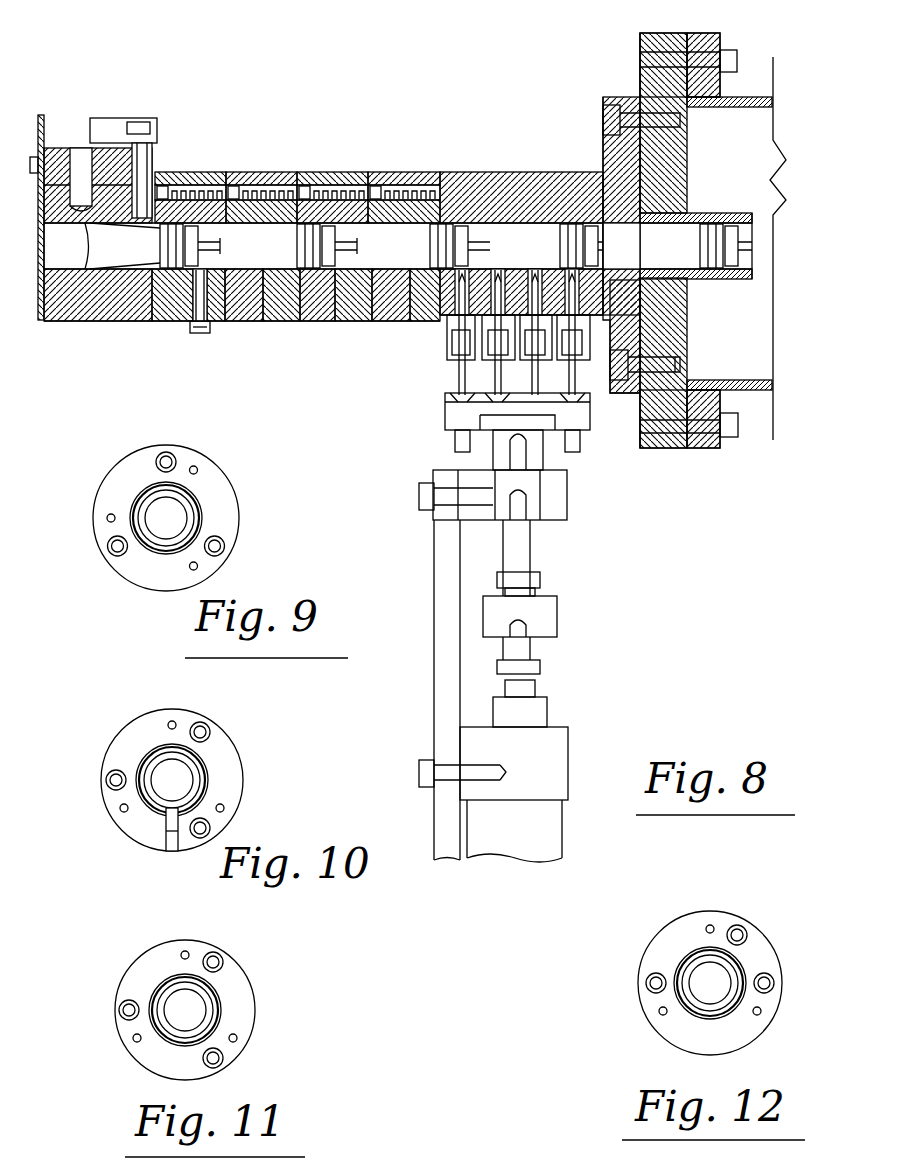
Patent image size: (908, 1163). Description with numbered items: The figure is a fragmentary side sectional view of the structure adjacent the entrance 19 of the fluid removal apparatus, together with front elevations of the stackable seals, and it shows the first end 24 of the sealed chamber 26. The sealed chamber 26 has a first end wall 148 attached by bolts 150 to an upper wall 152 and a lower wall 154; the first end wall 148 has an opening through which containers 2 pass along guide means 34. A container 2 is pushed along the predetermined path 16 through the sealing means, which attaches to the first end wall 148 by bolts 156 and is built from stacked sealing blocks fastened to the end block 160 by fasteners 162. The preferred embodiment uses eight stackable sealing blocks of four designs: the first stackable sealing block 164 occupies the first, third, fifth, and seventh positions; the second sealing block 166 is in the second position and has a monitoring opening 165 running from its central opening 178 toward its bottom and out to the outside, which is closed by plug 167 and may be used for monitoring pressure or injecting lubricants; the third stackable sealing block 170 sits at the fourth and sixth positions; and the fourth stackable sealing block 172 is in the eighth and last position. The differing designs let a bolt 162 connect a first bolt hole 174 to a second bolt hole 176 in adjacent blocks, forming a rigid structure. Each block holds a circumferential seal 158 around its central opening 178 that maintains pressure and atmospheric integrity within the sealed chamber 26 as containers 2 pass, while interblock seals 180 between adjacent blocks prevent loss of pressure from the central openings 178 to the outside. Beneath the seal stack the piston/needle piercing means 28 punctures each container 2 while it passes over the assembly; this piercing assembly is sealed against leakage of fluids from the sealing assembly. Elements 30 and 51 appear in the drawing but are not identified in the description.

In FIG. 8, the container 2 is at (705, 266).
In FIG. 8, the predetermined path 16 is at (700, 297).
In FIG. 8, the entrance 19 is at (56, 258).
In FIG. 8, the first end 24 is at (625, 80).
In FIG. 8, the sealed chamber 26 is at (655, 475).
In FIG. 8, the piercing means 28 is at (568, 698).
In FIG. 8, the valve housing assembly 30 is at (450, 140).
In FIG. 8, the guide means 34 is at (712, 213).
In FIG. 8, the pins 51 is at (572, 265).
In FIG. 8, the first end wall 148 is at (640, 48).
In FIG. 8, the bolts 150 is at (737, 50).
In FIG. 8, the upper wall 152 is at (762, 108).
In FIG. 8, the lower wall 154 is at (760, 393).
In FIG. 8, the bolts 156 is at (603, 118).
In FIG. 9, the circumferential seal 158 is at (187, 512).
In FIG. 10, the circumferential seal 158 is at (196, 773).
In FIG. 11, the circumferential seal 158 is at (208, 1008).
In FIG. 12, the circumferential seal 158 is at (732, 975).
In FIG. 8, the end block 160 is at (540, 172).
In FIG. 8, the fasteners 162 is at (250, 172).
In FIG. 8, the first stackable sealing block 164 is at (172, 321).
In FIG. 9, the first stackable sealing block 164 is at (218, 520).
In FIG. 8, the monitoring opening 165 is at (196, 334).
In FIG. 8, the second sealing block 166 is at (196, 172).
In FIG. 10, the second sealing block 166 is at (222, 750).
In FIG. 8, the plug 167 is at (205, 336).
In FIG. 8, the third stackable sealing block 170 is at (350, 172).
In FIG. 11, the third stackable sealing block 170 is at (240, 1012).
In FIG. 8, the fourth stackable sealing block 172 is at (415, 172).
In FIG. 12, the fourth stackable sealing block 172 is at (757, 945).
In FIG. 9, the first bolt hole 174 is at (168, 452).
In FIG. 10, the first bolt hole 174 is at (205, 725).
In FIG. 11, the first bolt hole 174 is at (218, 956).
In FIG. 12, the first bolt hole 174 is at (740, 925).
In FIG. 9, the second bolt hole 176 is at (197, 567).
In FIG. 10, the second bolt hole 176 is at (223, 810).
In FIG. 11, the second bolt hole 176 is at (236, 1040).
In FIG. 12, the second bolt hole 176 is at (660, 1012).
In FIG. 8, the central opening 178 is at (418, 240).
In FIG. 9, the central opening 178 is at (162, 530).
In FIG. 10, the central opening 178 is at (182, 783).
In FIG. 11, the central opening 178 is at (178, 1005).
In FIG. 12, the central opening 178 is at (710, 980).
In FIG. 9, the interblock seals 180 is at (140, 500).
In FIG. 10, the interblock seals 180 is at (153, 750).
In FIG. 11, the interblock seals 180 is at (170, 1040).
In FIG. 12, the interblock seals 180 is at (695, 950).